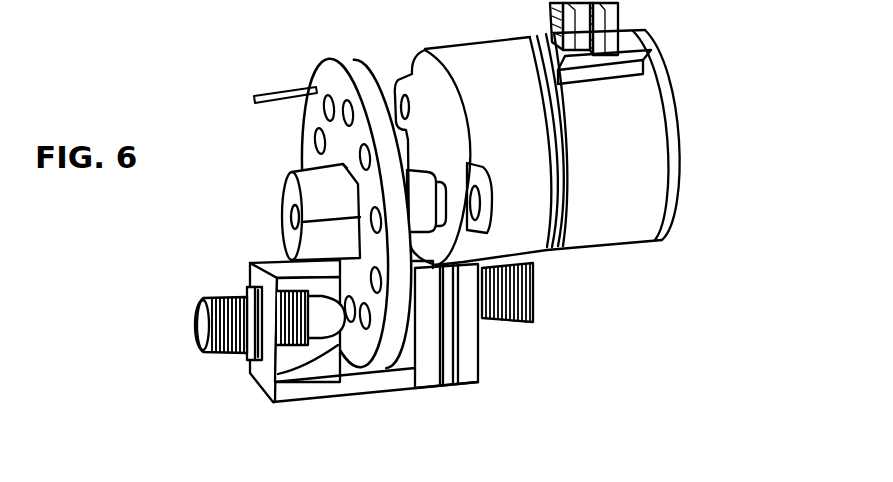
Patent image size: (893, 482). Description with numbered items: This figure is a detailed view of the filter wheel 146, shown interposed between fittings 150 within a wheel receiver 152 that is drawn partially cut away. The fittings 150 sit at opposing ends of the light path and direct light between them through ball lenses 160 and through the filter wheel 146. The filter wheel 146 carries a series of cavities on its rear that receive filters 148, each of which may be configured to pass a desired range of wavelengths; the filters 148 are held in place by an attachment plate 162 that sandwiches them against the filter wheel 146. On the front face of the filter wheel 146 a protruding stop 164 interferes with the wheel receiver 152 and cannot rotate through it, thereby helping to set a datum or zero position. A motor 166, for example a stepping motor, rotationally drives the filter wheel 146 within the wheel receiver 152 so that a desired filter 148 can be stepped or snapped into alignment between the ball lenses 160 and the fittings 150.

The filter wheel 146 is at (387, 353).
The filters 148 is at (347, 357).
The fittings 150 is at (213, 360).
The wheel receiver 152 is at (421, 372).
The lenses 160 is at (322, 302).
The attachment plate 162 is at (382, 80).
The protruding stop 164 is at (273, 97).
The motor 166 is at (612, 230).